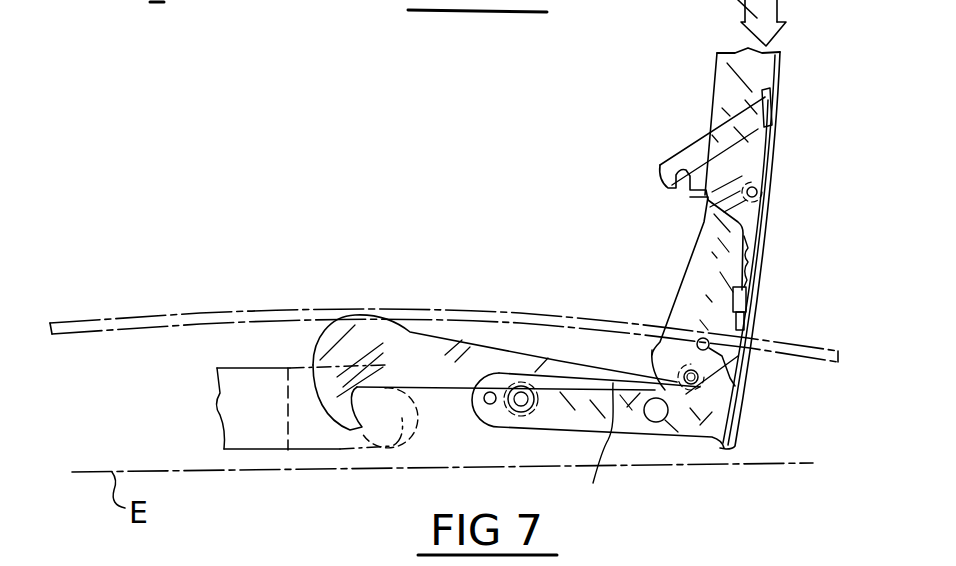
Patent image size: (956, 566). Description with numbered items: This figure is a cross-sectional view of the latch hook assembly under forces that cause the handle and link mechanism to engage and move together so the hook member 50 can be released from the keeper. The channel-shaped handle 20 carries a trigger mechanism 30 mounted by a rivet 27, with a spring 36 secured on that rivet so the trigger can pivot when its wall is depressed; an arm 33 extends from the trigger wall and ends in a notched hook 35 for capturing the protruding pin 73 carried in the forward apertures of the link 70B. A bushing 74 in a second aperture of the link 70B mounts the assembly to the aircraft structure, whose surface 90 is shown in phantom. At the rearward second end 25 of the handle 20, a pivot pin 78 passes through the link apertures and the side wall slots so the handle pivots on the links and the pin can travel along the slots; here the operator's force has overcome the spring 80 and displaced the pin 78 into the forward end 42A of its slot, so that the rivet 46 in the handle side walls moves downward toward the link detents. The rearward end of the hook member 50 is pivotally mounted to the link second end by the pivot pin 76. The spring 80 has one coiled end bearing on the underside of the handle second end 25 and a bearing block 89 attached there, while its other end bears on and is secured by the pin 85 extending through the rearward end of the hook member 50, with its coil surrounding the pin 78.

The handle 20 is at (804, 79).
The trigger mechanism 30 is at (782, 163).
The spring 36 is at (766, 96).
The arm 33 is at (658, 176).
The hook 35 is at (686, 190).
The rivet 27 is at (760, 198).
The spring 80 is at (706, 318).
The bearing block 89 is at (752, 291).
The rivet 46 is at (664, 309).
The rearward second end 25 is at (640, 349).
The hook member 50 is at (380, 338).
The surface 90 is at (76, 322).
The pivot pin 78 is at (698, 376).
The forward end of slot 42A is at (704, 398).
The pin 73 is at (487, 404).
The bushing 74 is at (521, 412).
The link 70B is at (572, 426).
The pin 85 is at (597, 445).
The pivot pin 76 is at (656, 422).